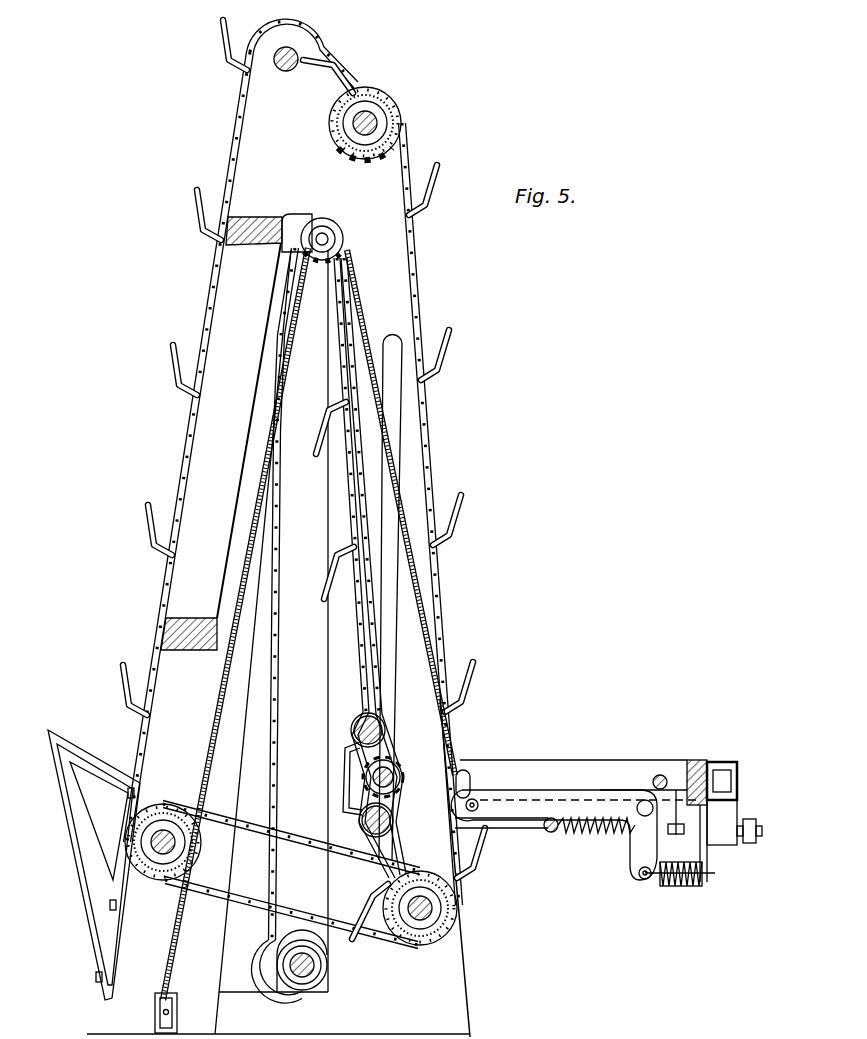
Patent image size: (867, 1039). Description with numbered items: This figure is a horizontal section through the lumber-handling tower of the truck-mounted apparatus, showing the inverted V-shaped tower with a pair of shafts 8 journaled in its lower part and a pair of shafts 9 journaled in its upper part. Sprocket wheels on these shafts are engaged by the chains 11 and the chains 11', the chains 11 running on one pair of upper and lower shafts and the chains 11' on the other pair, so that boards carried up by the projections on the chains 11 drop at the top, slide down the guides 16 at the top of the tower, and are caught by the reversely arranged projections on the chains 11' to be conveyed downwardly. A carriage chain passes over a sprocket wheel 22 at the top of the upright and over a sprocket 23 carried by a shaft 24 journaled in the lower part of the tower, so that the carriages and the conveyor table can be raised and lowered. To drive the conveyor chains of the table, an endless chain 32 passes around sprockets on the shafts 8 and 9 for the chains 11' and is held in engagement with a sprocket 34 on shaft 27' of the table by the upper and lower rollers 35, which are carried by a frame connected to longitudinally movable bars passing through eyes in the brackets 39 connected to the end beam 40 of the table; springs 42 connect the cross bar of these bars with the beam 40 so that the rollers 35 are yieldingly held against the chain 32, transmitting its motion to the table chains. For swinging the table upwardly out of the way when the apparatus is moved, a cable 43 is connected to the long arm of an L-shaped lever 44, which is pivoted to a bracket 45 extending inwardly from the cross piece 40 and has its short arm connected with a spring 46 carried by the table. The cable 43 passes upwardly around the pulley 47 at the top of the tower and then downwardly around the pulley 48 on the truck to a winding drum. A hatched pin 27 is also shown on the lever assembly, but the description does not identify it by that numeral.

The shafts 8 is at (163, 856).
The shafts 9 is at (356, 119).
The chains 11 is at (299, 483).
The chains 11' is at (397, 598).
The guides 16 is at (352, 70).
The sprocket wheel 22 is at (341, 246).
The sprocket 23 is at (302, 940).
The shaft 24 is at (318, 968).
The pivot pin 27 is at (641, 761).
The shaft 27' is at (333, 778).
The endless chain 32 is at (377, 671).
The sprocket 34 is at (394, 770).
The rollers 35 is at (354, 733).
The brackets 39 is at (548, 832).
The end beam 40 is at (703, 762).
The springs 42 is at (612, 838).
The cable 43 is at (430, 600).
The L-shaped lever 44 is at (548, 800).
The bracket 45 is at (676, 800).
The spring 46 is at (683, 887).
The pulley 47 is at (318, 225).
The pulley 48 is at (176, 1012).